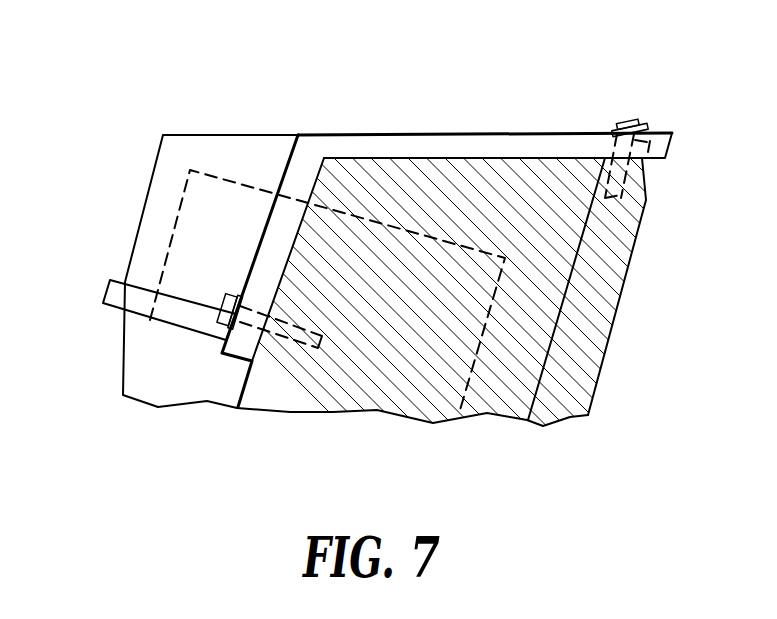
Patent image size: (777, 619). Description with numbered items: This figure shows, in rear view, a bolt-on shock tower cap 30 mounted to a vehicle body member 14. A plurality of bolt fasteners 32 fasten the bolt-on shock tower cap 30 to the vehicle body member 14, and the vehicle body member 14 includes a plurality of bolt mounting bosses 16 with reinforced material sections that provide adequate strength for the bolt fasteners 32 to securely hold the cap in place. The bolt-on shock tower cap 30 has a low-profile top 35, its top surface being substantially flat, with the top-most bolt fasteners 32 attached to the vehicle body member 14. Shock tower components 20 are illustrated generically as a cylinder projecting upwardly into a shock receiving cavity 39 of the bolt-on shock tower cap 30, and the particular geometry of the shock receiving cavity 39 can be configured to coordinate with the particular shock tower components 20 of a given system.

The vehicle body member 14 is at (422, 367).
The bolt mounting bosses 16 is at (573, 330).
The shock tower components 20 is at (168, 372).
The bolt-on shock tower cap 30 is at (340, 135).
The bolt fasteners 32 is at (225, 302).
The low-profile top 35 is at (252, 135).
The shock receiving cavity 39 is at (370, 217).